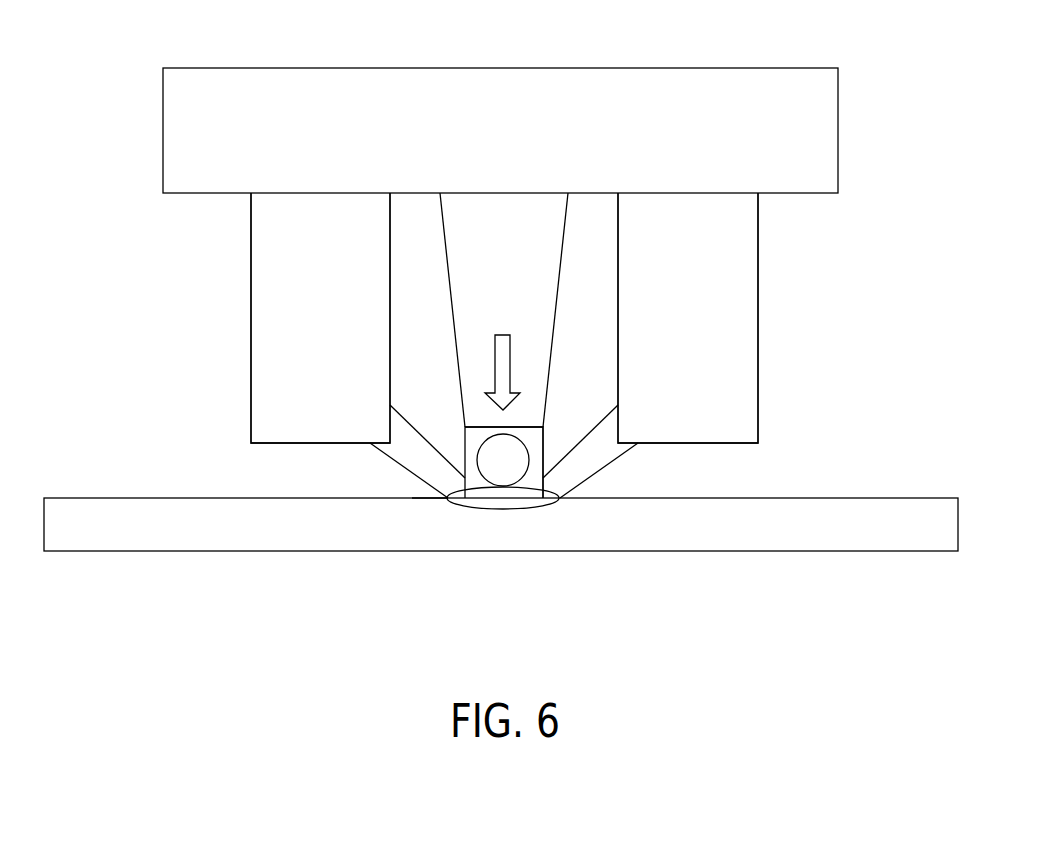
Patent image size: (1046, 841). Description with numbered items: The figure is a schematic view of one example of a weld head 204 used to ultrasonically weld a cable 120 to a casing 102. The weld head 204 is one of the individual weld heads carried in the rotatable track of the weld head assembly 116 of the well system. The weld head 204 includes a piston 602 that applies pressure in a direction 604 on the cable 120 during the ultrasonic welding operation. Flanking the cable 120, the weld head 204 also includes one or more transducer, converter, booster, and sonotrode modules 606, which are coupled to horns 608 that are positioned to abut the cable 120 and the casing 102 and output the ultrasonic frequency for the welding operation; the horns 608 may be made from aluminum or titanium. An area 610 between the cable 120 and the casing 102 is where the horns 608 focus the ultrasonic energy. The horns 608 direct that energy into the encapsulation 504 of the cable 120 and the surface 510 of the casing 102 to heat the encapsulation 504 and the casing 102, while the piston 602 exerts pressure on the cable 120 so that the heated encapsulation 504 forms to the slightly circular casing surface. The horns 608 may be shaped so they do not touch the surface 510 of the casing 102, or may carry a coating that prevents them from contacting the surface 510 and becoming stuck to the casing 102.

The weld head assembly 116 is at (618, 76).
The weld head 204 is at (823, 253).
The transducer, converter, booster, and sonotrode modules 606 is at (250, 312).
The piston 602 is at (558, 299).
The direction 604 is at (493, 365).
The cable 120 is at (556, 416).
The encapsulation 504 is at (462, 443).
The horns 608 is at (402, 462).
The area 610 is at (503, 510).
The surface 510 is at (412, 498).
The casing 102 is at (754, 537).